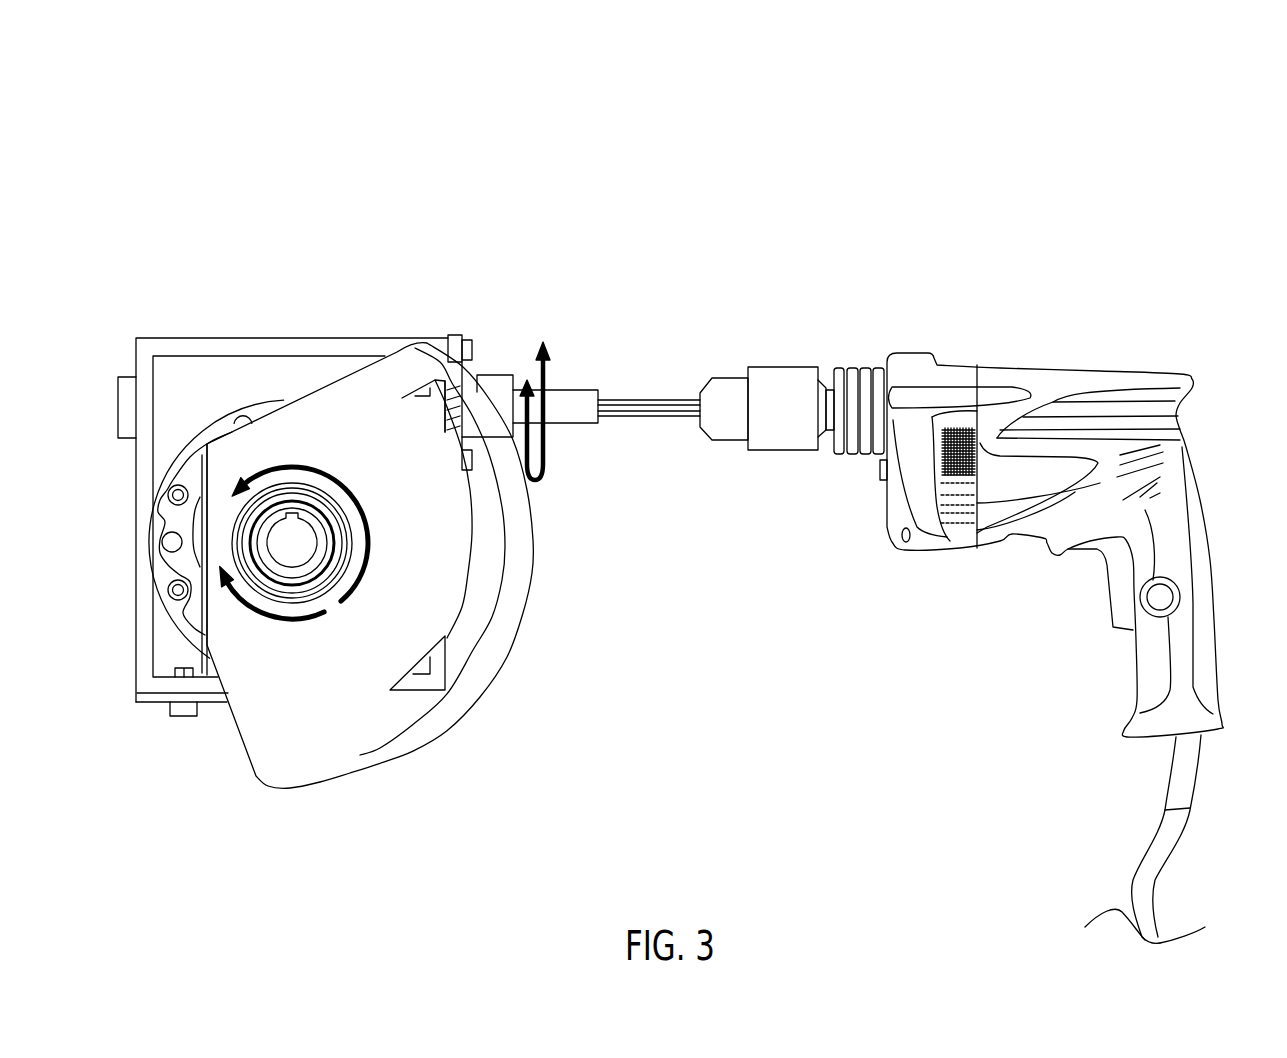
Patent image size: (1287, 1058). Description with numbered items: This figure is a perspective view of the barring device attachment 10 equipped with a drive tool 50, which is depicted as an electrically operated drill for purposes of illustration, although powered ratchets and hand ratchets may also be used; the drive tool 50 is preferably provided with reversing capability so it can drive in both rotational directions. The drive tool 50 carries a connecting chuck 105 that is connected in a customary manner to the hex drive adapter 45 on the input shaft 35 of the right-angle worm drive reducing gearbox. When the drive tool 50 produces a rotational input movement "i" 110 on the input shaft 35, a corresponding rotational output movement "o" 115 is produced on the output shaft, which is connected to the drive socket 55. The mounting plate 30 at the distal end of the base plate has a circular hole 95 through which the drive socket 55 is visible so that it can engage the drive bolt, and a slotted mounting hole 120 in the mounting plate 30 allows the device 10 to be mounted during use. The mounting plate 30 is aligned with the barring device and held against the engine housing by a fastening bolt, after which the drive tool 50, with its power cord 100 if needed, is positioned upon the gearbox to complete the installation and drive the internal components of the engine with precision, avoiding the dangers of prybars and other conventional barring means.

The barring device attachment 10 is at (337, 209).
The mounting plate 30 is at (391, 766).
The input shaft 35 is at (575, 405).
The hex drive adapter 45 is at (637, 410).
The drive tool 50 is at (1083, 425).
The drive socket 55 is at (308, 568).
The circular hole 95 is at (272, 551).
The power cord 100 is at (1160, 858).
The connecting chuck 105 is at (780, 405).
The rotational input movement "i" 110 is at (542, 486).
The rotational output movement "o" 115 is at (254, 470).
The slotted mounting hole 120 is at (425, 690).